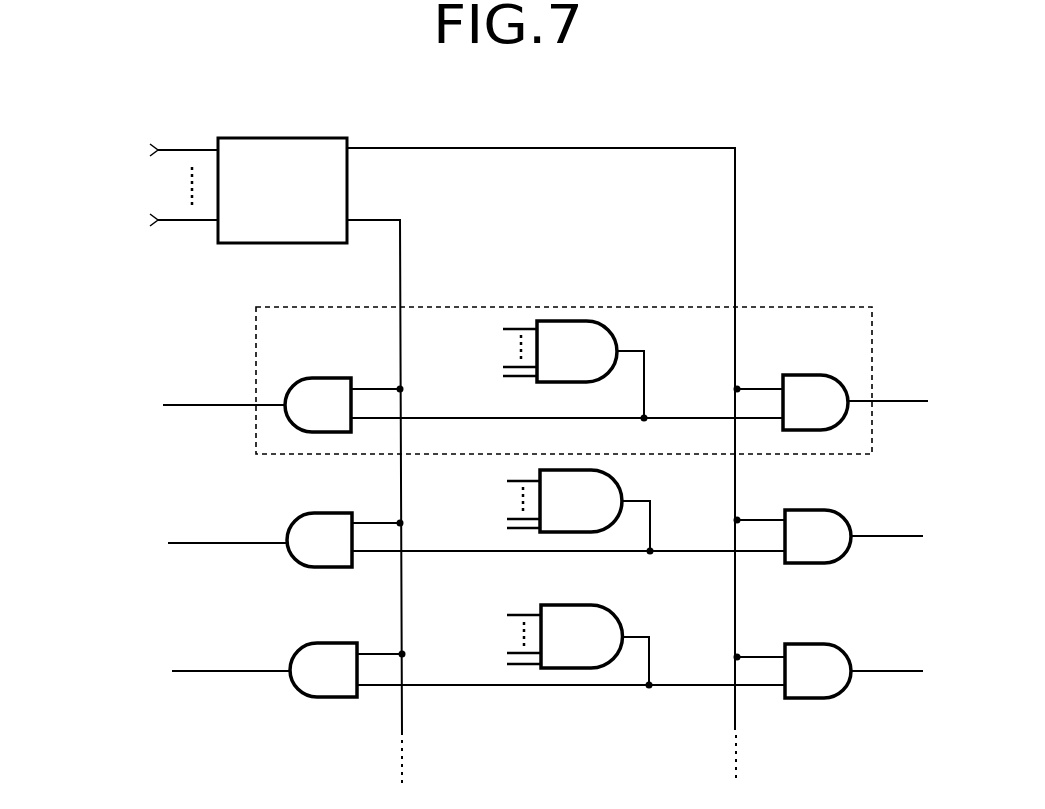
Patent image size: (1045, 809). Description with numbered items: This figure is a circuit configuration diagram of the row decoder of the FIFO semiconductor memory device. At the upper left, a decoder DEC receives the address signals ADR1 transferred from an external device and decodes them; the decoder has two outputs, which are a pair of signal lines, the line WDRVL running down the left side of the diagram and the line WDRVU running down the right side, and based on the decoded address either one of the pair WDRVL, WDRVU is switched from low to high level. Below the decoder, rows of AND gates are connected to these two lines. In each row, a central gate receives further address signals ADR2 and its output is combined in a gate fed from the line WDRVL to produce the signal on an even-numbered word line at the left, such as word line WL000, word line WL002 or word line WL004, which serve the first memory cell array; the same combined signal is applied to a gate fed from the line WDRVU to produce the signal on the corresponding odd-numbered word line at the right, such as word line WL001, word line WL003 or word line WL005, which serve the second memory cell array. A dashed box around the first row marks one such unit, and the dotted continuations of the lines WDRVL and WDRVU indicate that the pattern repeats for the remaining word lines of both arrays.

The decoder DEC is at (283, 138).
The first address signals ADR1 is at (140, 140).
The second address signals ADR2 is at (496, 323).
The lower word driver signal line WDRVL is at (400, 255).
The upper word driver signal line WDRVU is at (737, 255).
The word line WL000 is at (175, 406).
The word line WL001 is at (899, 402).
The word line WL002 is at (178, 545).
The word line WL003 is at (888, 537).
The word line WL004 is at (185, 672).
The word line WL005 is at (885, 672).